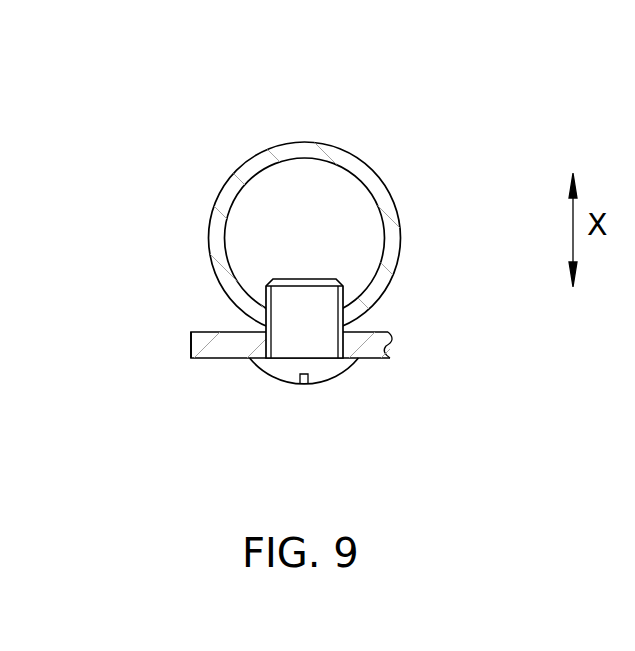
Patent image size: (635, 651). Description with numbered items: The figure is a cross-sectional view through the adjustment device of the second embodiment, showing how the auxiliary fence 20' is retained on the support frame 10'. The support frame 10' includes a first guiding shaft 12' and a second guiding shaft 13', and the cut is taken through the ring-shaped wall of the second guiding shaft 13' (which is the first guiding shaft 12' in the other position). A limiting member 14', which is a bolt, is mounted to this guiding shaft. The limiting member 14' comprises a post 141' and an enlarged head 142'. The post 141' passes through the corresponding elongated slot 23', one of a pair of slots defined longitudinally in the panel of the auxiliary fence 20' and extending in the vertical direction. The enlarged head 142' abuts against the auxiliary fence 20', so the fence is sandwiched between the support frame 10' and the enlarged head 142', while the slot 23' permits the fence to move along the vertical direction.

The support frame 10' is at (215, 93).
The second guiding shaft 13' is at (345, 280).
The first guiding shaft 12' is at (305, 238).
The auxiliary fence 20' is at (230, 303).
The elongated slot 23' is at (202, 299).
The post 141' is at (379, 318).
The limiting member 14' is at (331, 409).
The enlarged head 142' is at (232, 400).